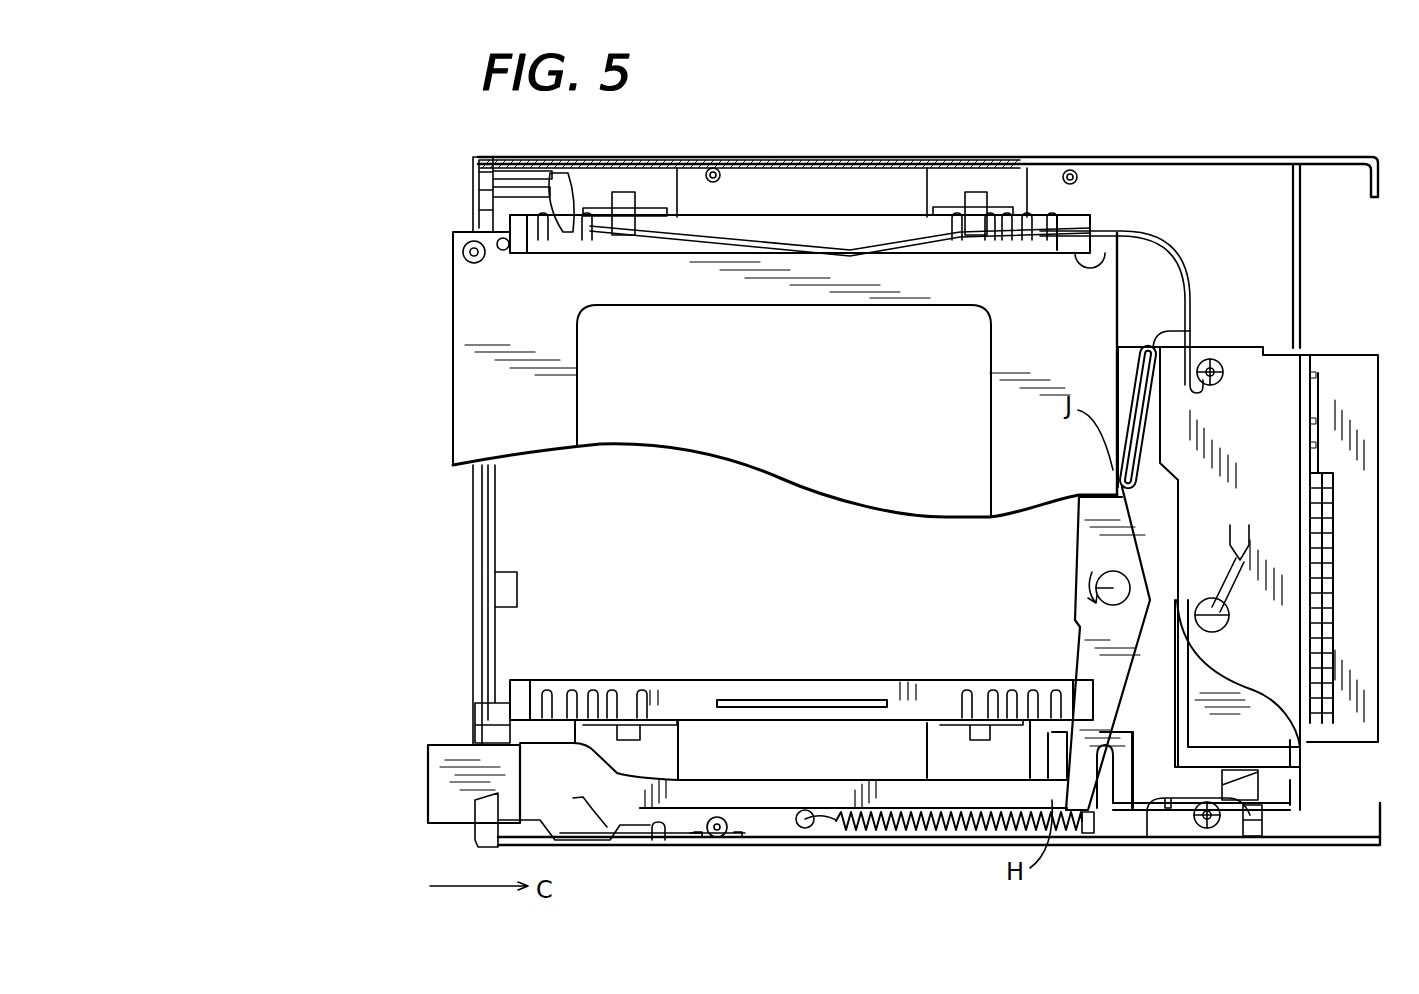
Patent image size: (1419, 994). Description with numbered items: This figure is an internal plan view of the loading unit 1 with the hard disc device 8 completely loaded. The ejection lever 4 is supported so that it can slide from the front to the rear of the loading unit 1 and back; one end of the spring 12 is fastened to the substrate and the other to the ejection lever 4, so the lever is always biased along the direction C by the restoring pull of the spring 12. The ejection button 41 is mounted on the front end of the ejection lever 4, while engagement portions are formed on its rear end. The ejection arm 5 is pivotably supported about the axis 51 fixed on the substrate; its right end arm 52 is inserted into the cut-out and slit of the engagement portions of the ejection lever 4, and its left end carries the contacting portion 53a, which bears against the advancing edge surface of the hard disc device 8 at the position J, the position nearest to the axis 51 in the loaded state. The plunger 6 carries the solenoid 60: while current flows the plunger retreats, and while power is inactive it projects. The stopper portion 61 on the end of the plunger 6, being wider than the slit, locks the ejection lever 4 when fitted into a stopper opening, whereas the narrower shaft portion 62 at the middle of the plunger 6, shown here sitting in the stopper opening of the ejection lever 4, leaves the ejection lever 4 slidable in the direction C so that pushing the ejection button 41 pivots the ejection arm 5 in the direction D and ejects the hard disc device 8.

The loading unit 1 is at (886, 135).
The hard disc device 8 is at (487, 321).
The ejection lever 4 is at (850, 792).
The ejection button 41 is at (448, 750).
The spring 12 is at (925, 838).
The ejection arm 5 is at (1099, 647).
The axis 51 is at (1095, 590).
The right end arm 52 is at (1130, 347).
The contacting portion 53a is at (1168, 331).
The solenoid 60 is at (1250, 705).
The plunger 6 is at (1262, 777).
The stopper portion 61 is at (1240, 812).
The shaft portion 62 is at (1262, 808).